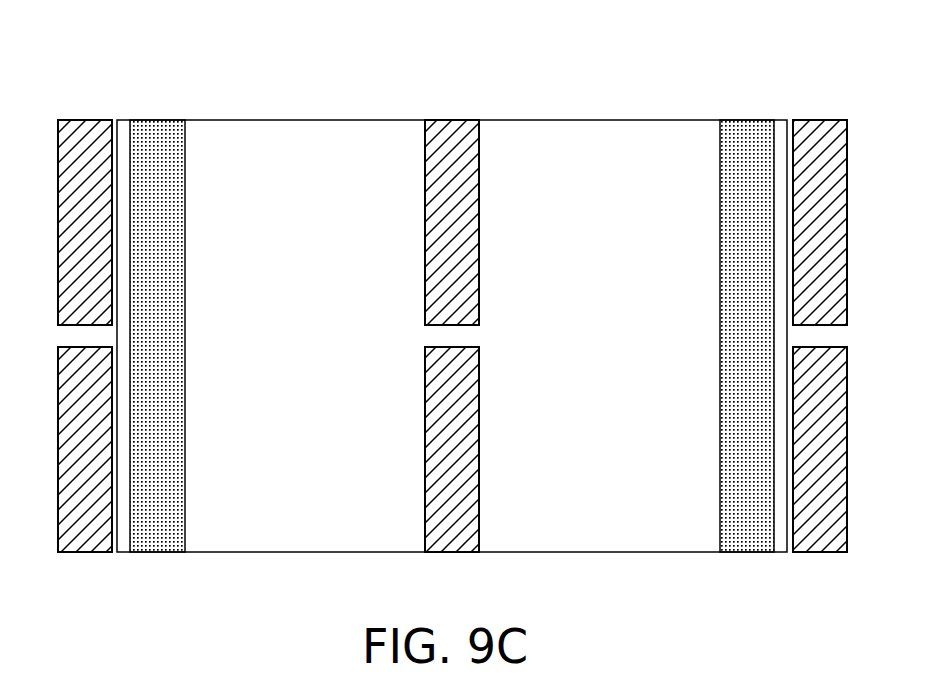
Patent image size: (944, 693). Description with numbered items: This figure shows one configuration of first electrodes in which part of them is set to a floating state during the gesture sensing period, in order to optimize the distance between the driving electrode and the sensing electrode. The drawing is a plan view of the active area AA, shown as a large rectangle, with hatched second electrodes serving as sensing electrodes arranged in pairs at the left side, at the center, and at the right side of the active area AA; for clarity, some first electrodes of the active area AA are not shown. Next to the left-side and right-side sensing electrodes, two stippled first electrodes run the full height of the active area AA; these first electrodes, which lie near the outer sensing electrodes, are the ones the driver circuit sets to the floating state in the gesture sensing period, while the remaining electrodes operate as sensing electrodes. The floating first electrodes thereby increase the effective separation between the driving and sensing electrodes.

The active area AA is at (310, 119).